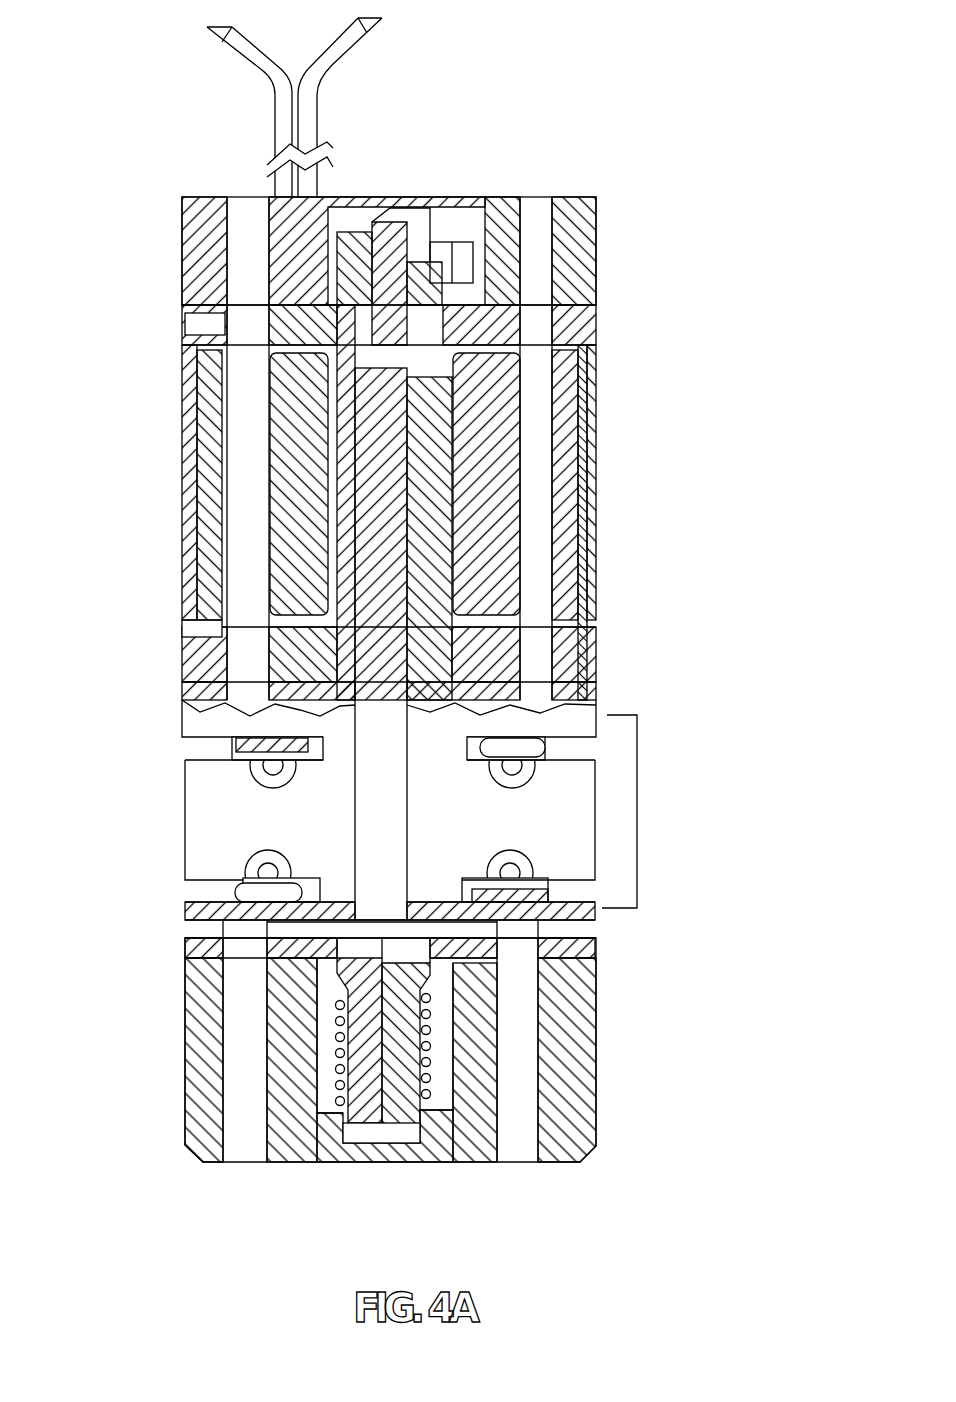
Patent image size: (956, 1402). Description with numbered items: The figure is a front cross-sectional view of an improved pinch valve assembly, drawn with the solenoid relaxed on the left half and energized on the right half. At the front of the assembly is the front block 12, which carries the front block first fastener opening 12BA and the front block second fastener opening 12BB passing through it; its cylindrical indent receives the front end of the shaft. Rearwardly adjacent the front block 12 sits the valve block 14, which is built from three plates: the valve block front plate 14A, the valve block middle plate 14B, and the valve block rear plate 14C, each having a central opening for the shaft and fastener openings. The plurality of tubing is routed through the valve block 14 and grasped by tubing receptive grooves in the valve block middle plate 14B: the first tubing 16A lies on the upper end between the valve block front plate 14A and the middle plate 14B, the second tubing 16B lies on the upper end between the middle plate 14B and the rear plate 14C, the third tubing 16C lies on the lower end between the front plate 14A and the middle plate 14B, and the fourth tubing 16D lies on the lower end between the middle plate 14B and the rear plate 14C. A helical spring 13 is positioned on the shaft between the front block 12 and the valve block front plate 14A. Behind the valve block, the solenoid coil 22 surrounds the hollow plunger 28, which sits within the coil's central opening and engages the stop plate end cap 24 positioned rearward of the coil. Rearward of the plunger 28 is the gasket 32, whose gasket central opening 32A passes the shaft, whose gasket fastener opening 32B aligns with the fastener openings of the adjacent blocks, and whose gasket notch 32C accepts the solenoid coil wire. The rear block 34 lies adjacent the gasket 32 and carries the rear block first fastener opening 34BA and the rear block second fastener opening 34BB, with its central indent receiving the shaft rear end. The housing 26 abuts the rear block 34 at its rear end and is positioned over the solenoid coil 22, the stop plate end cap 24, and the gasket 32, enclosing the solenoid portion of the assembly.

The front block 12 is at (597, 1088).
The front block first fastener opening 12BA is at (522, 1147).
The front block second fastener opening 12BB is at (242, 1150).
The helical spring 13 is at (340, 1088).
The valve block 14 is at (637, 798).
The valve block front plate 14A is at (190, 913).
The valve block middle plate 14B is at (200, 808).
The valve block rear plate 14C is at (185, 712).
The first tubing 16A is at (250, 873).
The second tubing 16B is at (262, 763).
The third tubing 16C is at (530, 878).
The fourth tubing 16D is at (535, 772).
The solenoid coil 22 is at (335, 520).
The stop plate end cap 24 is at (597, 324).
The housing 26 is at (592, 517).
The hollow plunger 28 is at (197, 363).
The gasket 32 is at (185, 302).
The gasket central opening 32A is at (360, 1118).
The upper armature 32B is at (403, 240).
The gasket notch 32C is at (373, 510).
The rear block 34 is at (597, 260).
The rear block first fastener opening 34BA is at (535, 220).
The rear block second fastener opening 34BB is at (250, 243).